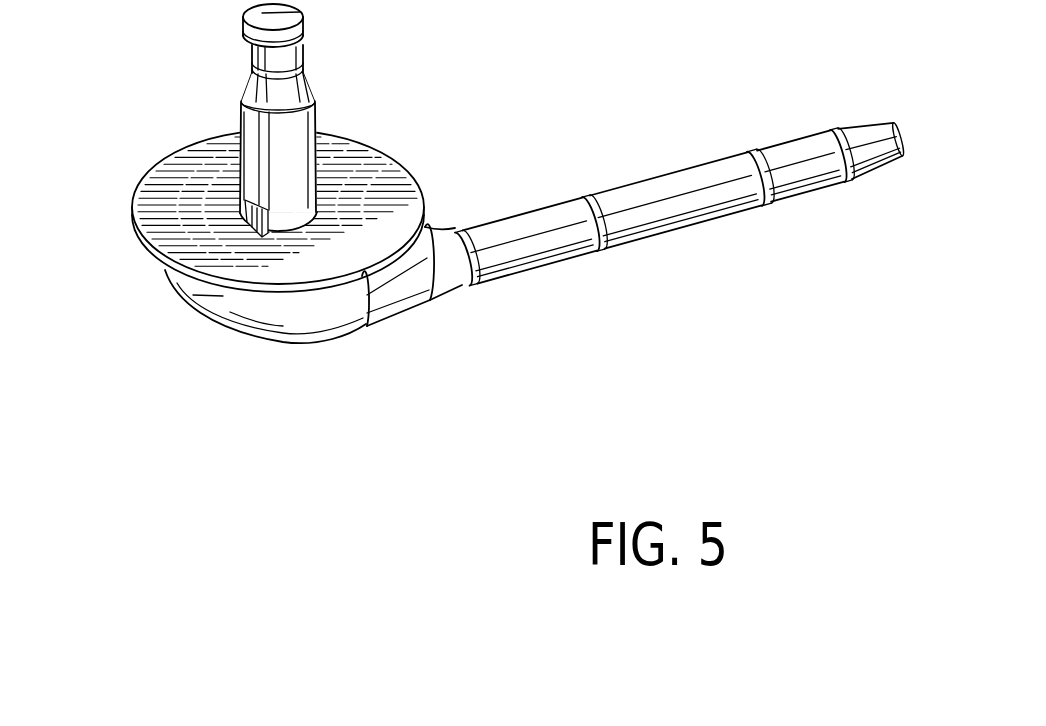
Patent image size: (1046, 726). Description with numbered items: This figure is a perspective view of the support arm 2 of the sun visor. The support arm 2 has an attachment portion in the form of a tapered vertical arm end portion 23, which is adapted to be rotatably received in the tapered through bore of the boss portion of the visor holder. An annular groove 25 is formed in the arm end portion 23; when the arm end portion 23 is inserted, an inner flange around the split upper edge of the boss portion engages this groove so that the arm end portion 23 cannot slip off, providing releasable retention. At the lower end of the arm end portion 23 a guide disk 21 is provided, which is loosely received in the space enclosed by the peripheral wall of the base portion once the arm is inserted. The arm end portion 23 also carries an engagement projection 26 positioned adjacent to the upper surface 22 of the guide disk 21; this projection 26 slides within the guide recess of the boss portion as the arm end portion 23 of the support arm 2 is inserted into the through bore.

The support arm 2 is at (715, 288).
The guide disk 21 is at (137, 263).
The upper surface 22 is at (330, 242).
The arm end portion 23 is at (291, 152).
The annular groove 25 is at (280, 62).
The engagement projection 26 is at (307, 232).